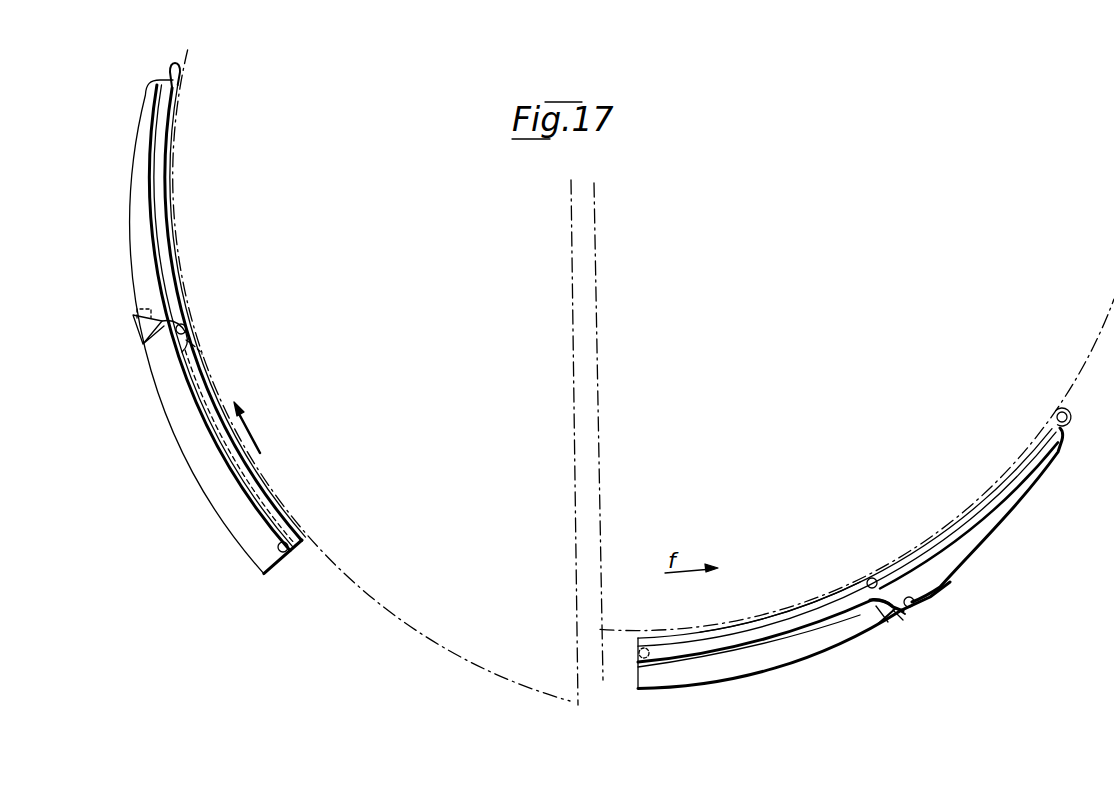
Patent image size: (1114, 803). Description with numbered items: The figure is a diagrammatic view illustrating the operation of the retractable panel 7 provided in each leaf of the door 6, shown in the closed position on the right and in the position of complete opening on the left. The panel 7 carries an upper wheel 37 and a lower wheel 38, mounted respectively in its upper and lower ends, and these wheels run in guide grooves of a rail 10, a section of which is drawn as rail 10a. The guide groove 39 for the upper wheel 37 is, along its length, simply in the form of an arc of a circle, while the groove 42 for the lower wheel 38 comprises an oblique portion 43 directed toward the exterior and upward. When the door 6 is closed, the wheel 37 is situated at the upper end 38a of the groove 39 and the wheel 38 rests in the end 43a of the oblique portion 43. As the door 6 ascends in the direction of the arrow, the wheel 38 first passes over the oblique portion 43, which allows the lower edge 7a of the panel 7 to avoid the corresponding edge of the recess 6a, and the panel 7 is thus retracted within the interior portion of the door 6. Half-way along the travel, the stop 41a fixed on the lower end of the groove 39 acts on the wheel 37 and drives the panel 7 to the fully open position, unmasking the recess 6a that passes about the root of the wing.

The door 6 is at (150, 388).
The recess 6a is at (890, 620).
The retractable panel 7 is at (215, 437).
The lower edge of the panel 7a is at (884, 595).
The rail 10 is at (157, 300).
The guide strip section 10a is at (762, 620).
The upper wheel 37 is at (187, 330).
The lower wheel 38 is at (285, 555).
The upper end of the groove 38a is at (177, 78).
The guide groove 39 is at (163, 218).
The stop 41a is at (202, 354).
The groove 42 is at (666, 656).
The oblique portion 43 is at (878, 618).
The end of the oblique portion 43a is at (895, 613).